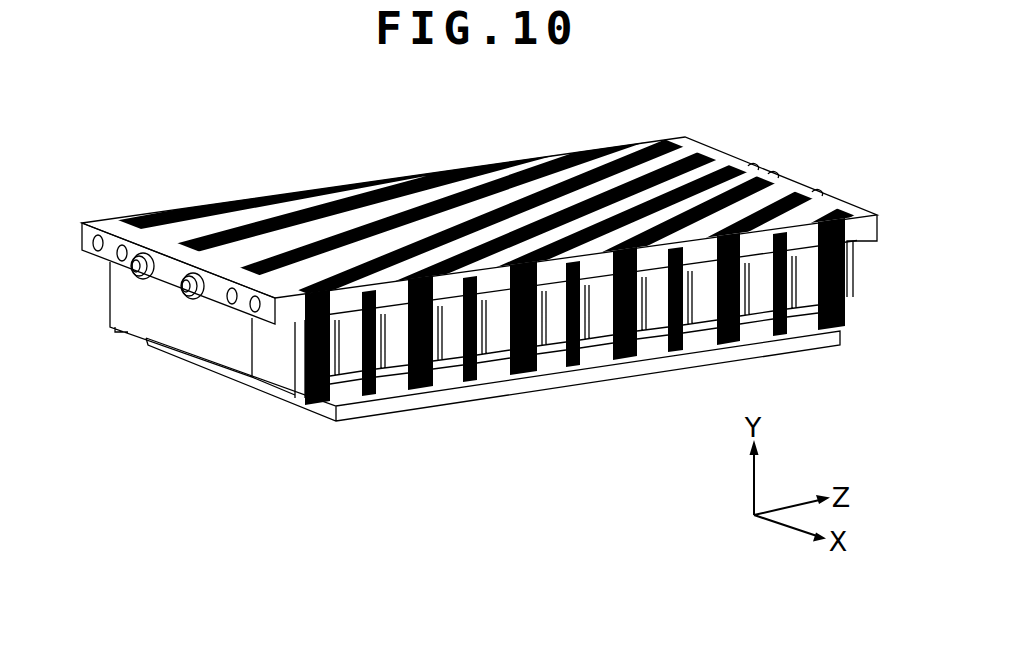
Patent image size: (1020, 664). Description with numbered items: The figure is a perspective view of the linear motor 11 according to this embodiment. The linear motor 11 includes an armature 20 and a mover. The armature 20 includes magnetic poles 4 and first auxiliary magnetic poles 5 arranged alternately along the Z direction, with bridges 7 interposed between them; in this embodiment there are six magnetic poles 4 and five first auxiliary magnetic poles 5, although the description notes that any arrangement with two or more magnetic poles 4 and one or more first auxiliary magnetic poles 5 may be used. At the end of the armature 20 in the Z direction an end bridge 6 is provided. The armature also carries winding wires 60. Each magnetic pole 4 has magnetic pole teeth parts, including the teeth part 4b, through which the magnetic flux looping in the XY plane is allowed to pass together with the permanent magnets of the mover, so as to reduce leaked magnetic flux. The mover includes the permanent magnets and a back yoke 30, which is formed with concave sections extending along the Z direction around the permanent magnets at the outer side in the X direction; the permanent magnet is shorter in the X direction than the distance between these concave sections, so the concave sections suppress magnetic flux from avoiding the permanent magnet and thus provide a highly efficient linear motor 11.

The magnetic pole 4 is at (138, 217).
The magnetic pole teeth part 4b is at (831, 332).
The first auxiliary magnetic pole 5 is at (187, 209).
The end bridge 6 is at (108, 227).
The bridge 7 is at (170, 218).
The linear motor 11 is at (480, 346).
The armature 20 is at (480, 346).
The back yoke 30 is at (697, 370).
The winding wire 60 is at (183, 325).